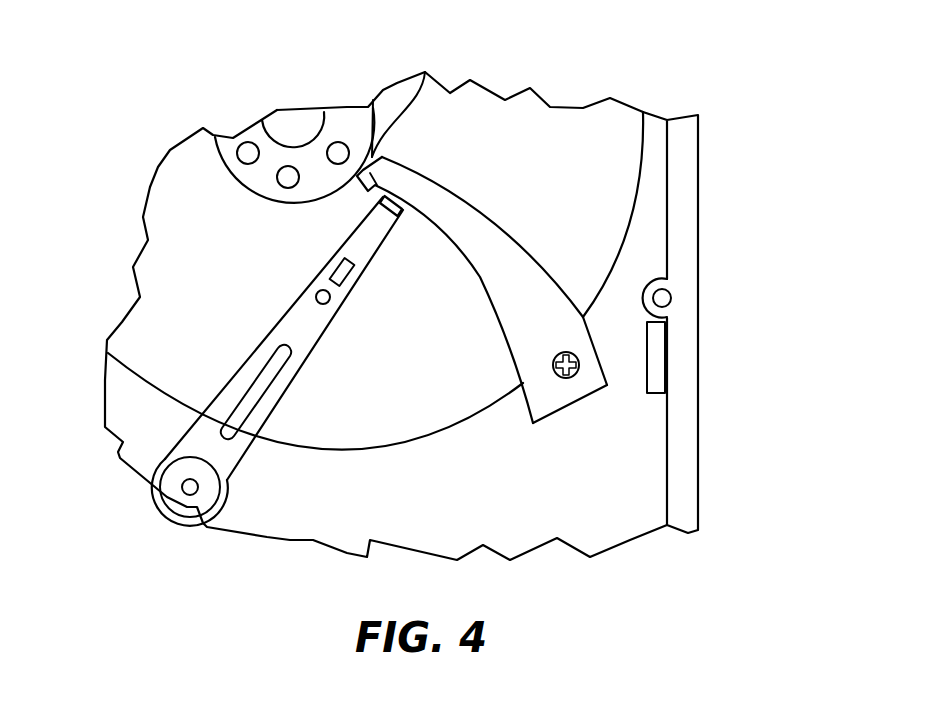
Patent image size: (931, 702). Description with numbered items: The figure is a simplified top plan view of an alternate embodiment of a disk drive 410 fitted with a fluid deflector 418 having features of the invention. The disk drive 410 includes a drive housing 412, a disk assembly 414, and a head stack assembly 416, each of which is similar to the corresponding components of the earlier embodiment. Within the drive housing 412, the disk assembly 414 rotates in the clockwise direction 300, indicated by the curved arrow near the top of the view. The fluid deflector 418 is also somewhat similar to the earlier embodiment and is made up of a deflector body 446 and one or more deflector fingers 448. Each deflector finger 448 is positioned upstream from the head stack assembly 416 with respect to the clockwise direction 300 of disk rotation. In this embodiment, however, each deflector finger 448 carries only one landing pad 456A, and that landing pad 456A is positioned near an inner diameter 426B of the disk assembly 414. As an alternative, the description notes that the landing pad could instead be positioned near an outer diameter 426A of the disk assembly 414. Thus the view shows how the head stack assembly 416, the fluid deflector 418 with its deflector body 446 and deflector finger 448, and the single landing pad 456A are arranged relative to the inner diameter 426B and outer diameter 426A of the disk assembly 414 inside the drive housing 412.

The clockwise direction 300 is at (492, 164).
The disk drive 410 is at (658, 104).
The drive housing 412 is at (682, 375).
The disk assembly 414 is at (163, 268).
The head stack assembly 416 is at (200, 440).
The fluid deflector 418 is at (521, 254).
The outer diameter 426A is at (128, 353).
The inner diameter 426B is at (383, 110).
The deflector body 446 is at (552, 400).
The deflector finger 448 is at (523, 282).
The landing pad 456A is at (425, 72).